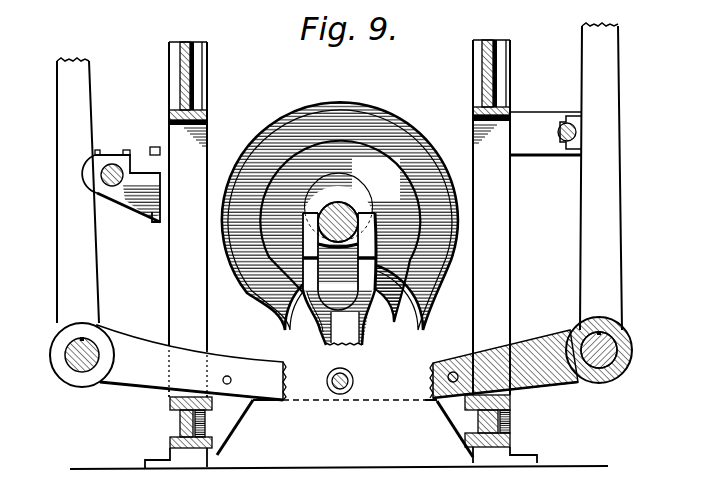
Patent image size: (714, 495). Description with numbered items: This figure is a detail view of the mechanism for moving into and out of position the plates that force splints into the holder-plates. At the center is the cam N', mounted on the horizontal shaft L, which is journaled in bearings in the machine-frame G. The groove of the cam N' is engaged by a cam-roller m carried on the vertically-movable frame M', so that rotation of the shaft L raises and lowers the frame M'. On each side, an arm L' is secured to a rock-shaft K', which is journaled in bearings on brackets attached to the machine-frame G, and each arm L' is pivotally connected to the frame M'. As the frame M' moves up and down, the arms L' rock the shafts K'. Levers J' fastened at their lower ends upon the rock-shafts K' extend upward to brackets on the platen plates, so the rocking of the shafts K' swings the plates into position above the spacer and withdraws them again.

The lever J' is at (324, 176).
The machine-frame G is at (182, 303).
The cam N' is at (340, 222).
The horizontal shaft L is at (339, 256).
The cam-roller m is at (344, 394).
The vertically-movable frame M' is at (345, 428).
The arm L' is at (341, 362).
The rock-shaft K' is at (342, 369).